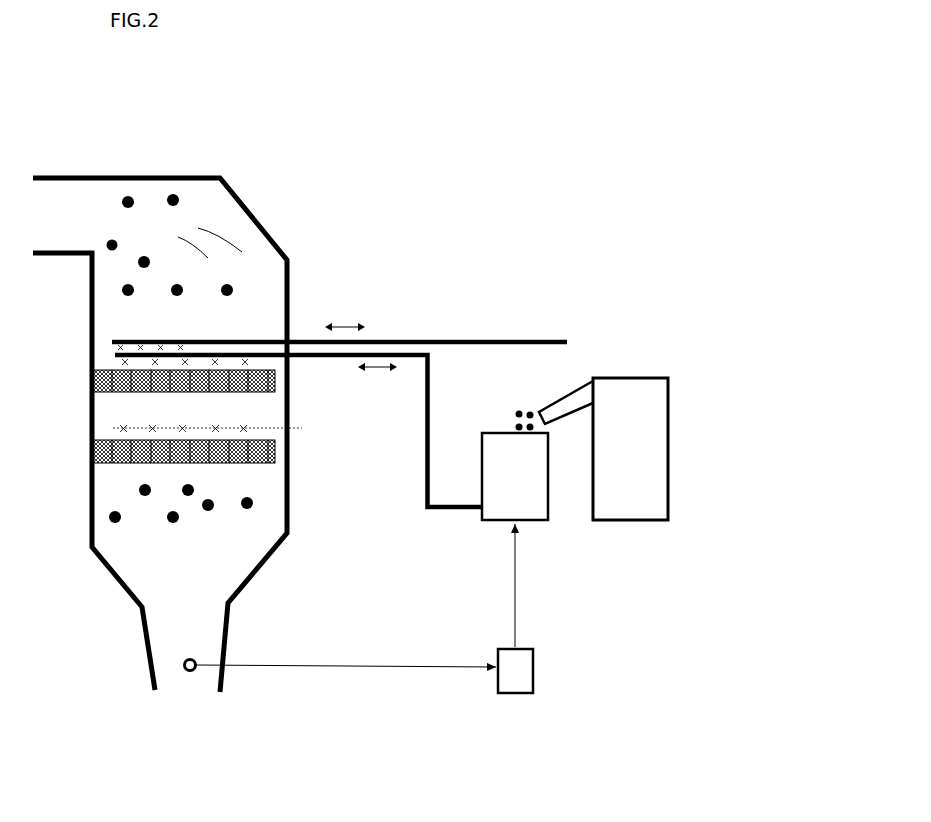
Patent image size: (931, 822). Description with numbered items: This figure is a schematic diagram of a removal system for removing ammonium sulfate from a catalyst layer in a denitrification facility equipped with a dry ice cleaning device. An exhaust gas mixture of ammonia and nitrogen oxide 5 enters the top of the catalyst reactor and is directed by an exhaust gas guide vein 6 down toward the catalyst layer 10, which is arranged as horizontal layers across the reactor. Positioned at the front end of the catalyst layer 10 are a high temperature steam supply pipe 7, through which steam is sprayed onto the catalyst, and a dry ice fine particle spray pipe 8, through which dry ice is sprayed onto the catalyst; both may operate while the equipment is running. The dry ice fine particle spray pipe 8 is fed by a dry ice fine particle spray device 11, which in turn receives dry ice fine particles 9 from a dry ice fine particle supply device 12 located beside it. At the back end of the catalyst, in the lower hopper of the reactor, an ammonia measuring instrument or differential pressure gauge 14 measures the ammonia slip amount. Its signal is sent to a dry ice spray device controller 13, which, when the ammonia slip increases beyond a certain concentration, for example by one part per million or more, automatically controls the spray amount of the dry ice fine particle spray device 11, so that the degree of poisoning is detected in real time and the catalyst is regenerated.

The exhaust gas mixture of ammonia and nitrogen oxide 5 is at (146, 195).
The exhaust gas guide vein 6 is at (248, 244).
The high temperature steam supply pipe 7 is at (351, 338).
The dry ice fine particle spray pipe 8 is at (309, 362).
The dry ice fine particles 9 is at (516, 410).
The catalyst layer 10 is at (277, 397).
The dry ice fine particle spray device 11 is at (538, 526).
The dry ice fine particle supply device 12 is at (624, 526).
The dry ice spray device controller 13 is at (544, 682).
The ammonia measuring instrument or differential pressure gauge 14 is at (188, 686).